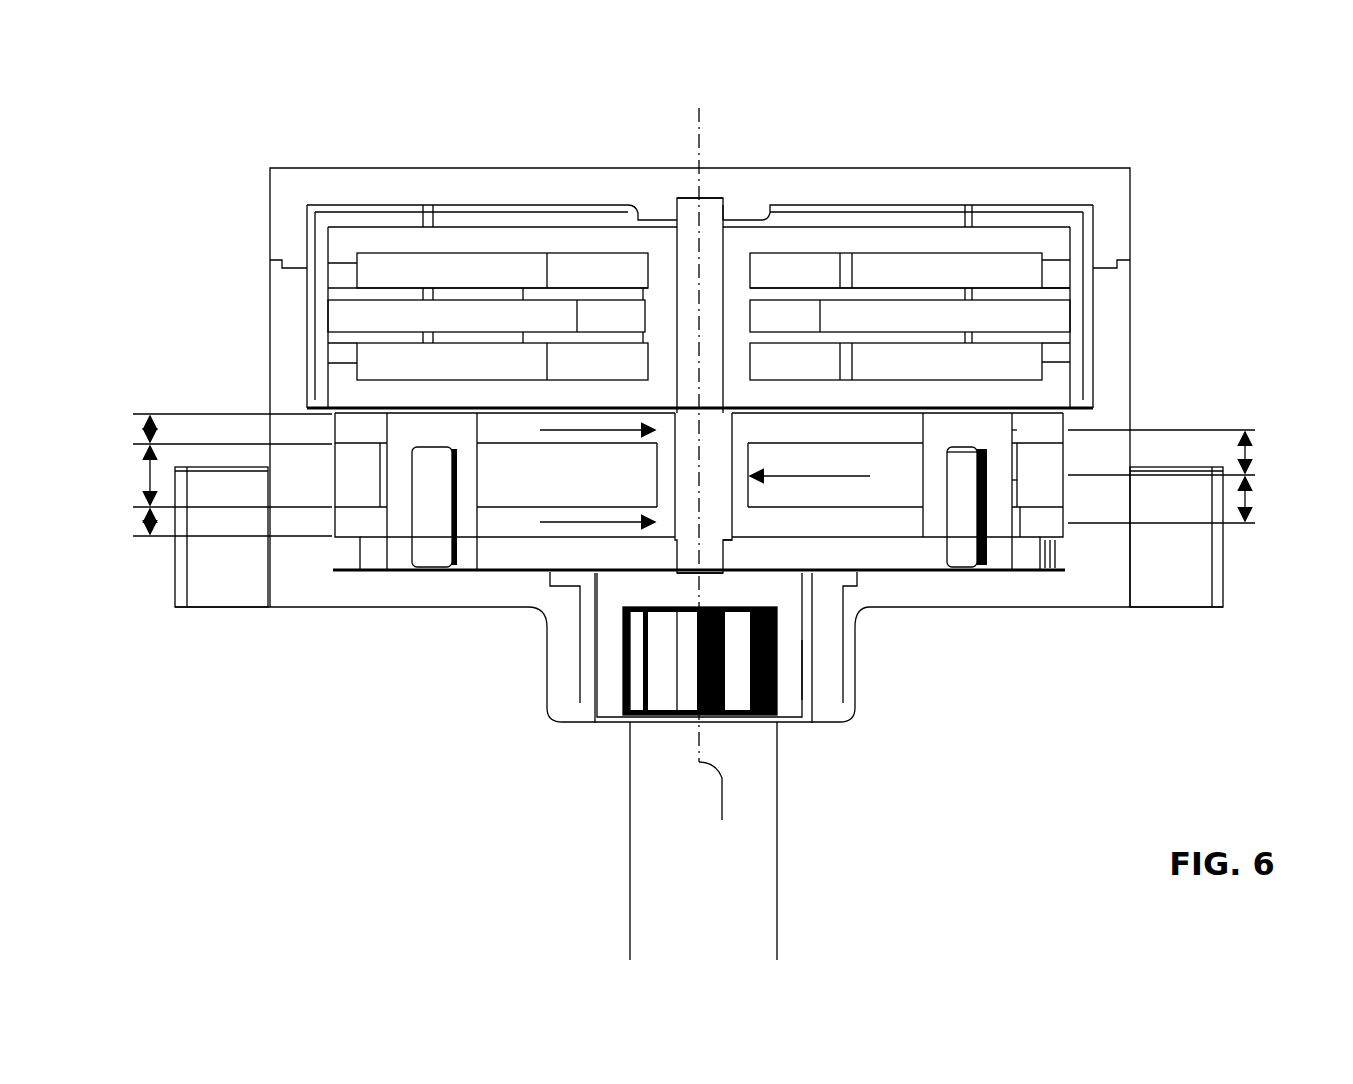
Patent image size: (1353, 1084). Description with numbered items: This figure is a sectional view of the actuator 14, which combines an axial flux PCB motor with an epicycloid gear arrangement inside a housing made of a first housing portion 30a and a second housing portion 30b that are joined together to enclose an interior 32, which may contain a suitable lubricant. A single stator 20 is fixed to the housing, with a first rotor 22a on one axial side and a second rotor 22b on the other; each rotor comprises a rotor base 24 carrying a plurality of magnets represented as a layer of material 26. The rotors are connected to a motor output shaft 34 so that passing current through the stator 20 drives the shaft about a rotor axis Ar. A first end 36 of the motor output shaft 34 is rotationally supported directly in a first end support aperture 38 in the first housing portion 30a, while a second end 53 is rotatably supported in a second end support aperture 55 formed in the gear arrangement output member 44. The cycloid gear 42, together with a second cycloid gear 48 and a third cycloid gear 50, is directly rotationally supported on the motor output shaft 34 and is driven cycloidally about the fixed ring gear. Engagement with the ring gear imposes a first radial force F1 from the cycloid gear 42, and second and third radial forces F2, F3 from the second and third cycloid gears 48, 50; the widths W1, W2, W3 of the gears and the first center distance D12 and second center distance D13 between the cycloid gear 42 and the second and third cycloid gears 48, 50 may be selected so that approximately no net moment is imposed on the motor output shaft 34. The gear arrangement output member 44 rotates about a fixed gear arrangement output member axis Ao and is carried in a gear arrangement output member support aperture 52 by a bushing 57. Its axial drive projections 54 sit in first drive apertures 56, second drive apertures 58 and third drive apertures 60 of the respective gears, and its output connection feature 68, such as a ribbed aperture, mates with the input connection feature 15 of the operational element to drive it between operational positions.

The actuator 14 is at (262, 99).
The input connection feature 15 is at (780, 935).
The stator 20 is at (887, 320).
The first rotor 22a is at (340, 240).
The second rotor 22b is at (342, 383).
The rotor base 24 is at (419, 392).
The layer of material 26 is at (473, 358).
The first housing portion 30a is at (1130, 202).
The second housing portion 30b is at (1115, 320).
The interior 32 is at (316, 340).
The motor output shaft 34 is at (683, 278).
The first end 36 is at (688, 207).
The first end support aperture 38 is at (718, 208).
The cycloid gear 42 is at (538, 487).
The gear arrangement output member 44 is at (612, 703).
The second cycloid gear 48 is at (500, 428).
The third cycloid gear 50 is at (550, 532).
The gear arrangement output member support aperture 52 is at (765, 650).
The second end 53 is at (638, 705).
The axial drive projections 54 is at (1012, 477).
The second end support aperture 55 is at (697, 557).
The first drive apertures 56 is at (982, 443).
The bushing 57 is at (815, 672).
The second drive apertures 58 is at (1015, 480).
The third drive apertures 60 is at (1018, 430).
The output connection feature 68 is at (727, 557).
The rotor axis Ar is at (697, 123).
The gear arrangement output member axis Ao is at (717, 810).
The first radial force F1 is at (820, 478).
The second radial force F2 is at (540, 432).
The third radial force F3 is at (602, 525).
The width W1 is at (213, 476).
The width W2 is at (213, 429).
The width W3 is at (213, 522).
The first center distance D12 is at (1187, 452).
The second center distance D13 is at (1187, 500).